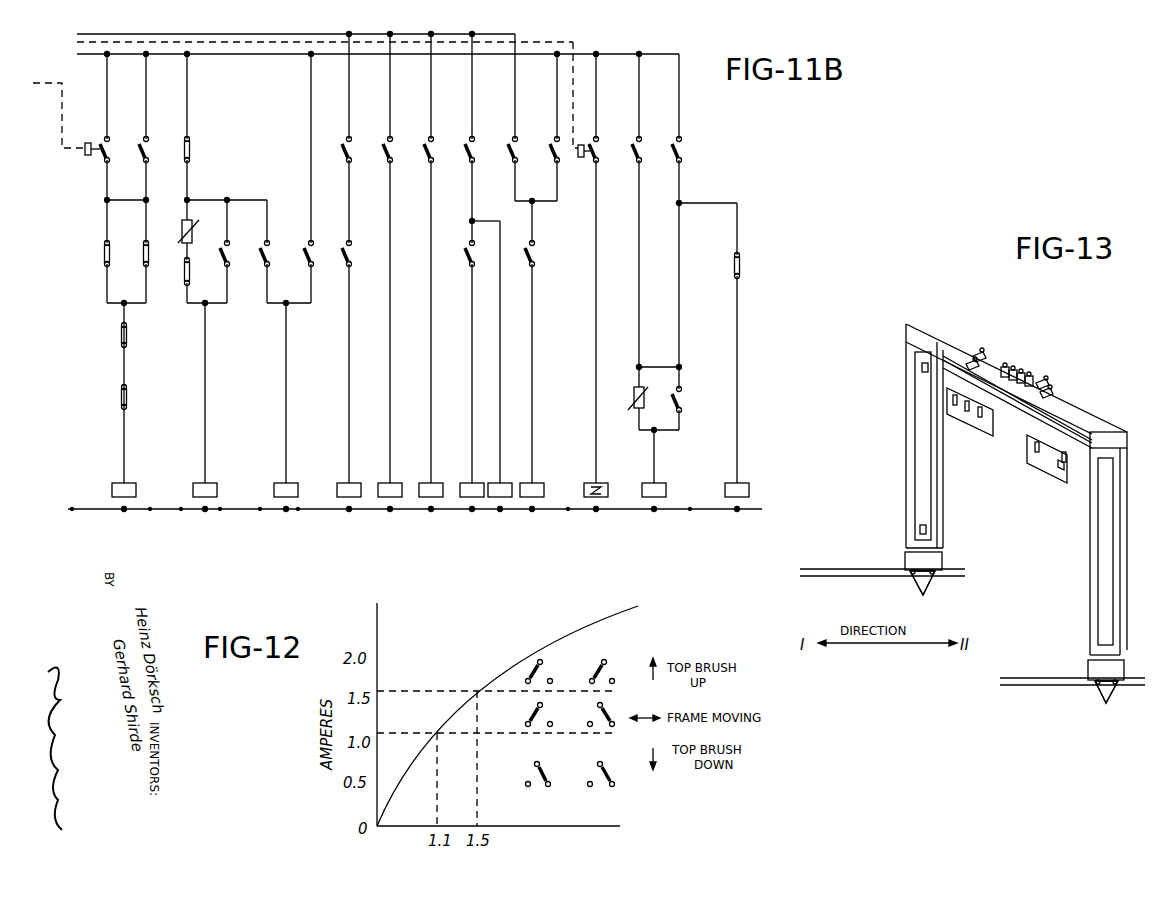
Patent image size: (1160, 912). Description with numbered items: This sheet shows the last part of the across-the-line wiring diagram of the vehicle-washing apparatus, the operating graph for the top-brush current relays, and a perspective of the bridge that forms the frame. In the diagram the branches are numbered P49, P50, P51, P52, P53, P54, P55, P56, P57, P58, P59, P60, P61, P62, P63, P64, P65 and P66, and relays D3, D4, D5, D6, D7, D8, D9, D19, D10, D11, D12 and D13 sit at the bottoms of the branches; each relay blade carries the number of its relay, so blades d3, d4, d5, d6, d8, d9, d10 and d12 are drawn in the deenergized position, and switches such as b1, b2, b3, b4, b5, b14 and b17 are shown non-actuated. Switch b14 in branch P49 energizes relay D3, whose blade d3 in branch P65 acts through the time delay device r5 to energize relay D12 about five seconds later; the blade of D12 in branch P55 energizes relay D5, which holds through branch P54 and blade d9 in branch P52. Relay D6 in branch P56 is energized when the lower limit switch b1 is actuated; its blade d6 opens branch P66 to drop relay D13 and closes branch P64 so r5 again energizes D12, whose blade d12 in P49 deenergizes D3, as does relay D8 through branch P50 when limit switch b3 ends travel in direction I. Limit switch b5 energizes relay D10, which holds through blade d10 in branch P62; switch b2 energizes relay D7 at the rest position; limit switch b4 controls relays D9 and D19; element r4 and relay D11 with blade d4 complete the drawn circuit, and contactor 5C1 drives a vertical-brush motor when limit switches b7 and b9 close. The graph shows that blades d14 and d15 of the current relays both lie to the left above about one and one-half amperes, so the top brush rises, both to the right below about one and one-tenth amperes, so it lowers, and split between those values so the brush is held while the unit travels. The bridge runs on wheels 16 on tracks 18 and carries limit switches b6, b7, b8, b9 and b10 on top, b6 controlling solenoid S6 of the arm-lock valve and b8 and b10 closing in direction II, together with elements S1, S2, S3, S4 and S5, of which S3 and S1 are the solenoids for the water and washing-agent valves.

In FIG. 11B, the switch b14 is at (99, 163).
In FIG. 11B, the blade of relay D12 d12 is at (104, 254).
In FIG. 11B, the relay contact d4 is at (121, 334).
In FIG. 11B, the blade of relay D8 d8 is at (127, 395).
In FIG. 11B, the blade of relay D9 d9 is at (190, 150).
In FIG. 11B, the adjustable resistor r4 is at (180, 232).
In FIG. 11B, the blade of relay D3 d3 is at (184, 275).
In FIG. 11B, the blade of relay D5 d5 is at (268, 248).
In FIG. 11B, the lower limit switch b1 is at (357, 149).
In FIG. 13, the lower limit switch b1 is at (926, 529).
In FIG. 11B, the contactor 5C1 is at (363, 254).
In FIG. 11B, the switch b2 is at (399, 148).
In FIG. 13, the switch b2 is at (1029, 372).
In FIG. 11B, the limit switch b3 is at (440, 148).
In FIG. 13, the limit switch b3 is at (1005, 363).
In FIG. 11B, the limit switch b4 is at (481, 148).
In FIG. 13, the limit switch b4 is at (921, 367).
In FIG. 11B, the limit switch b5 is at (524, 148).
In FIG. 13, the limit switch b5 is at (1013, 366).
In FIG. 11B, the blade of relay D10 d10 is at (559, 150).
In FIG. 11B, the push-button switch b17 is at (598, 150).
In FIG. 11B, the blade of relay D6 d6 is at (641, 150).
In FIG. 11B, the time delay device r5 is at (633, 396).
In FIG. 11B, the relay D3 is at (136, 490).
In FIG. 11B, the relay D4 is at (215, 486).
In FIG. 11B, the relay D5 is at (296, 486).
In FIG. 11B, the relay D6 is at (352, 483).
In FIG. 11B, the relay D7 is at (394, 483).
In FIG. 11B, the relay D8 is at (432, 486).
In FIG. 11B, the relay D9 is at (476, 483).
In FIG. 11B, the relay D19 is at (500, 483).
In FIG. 11B, the relay D10 is at (532, 483).
In FIG. 11B, the time-delay relay D11 is at (586, 483).
In FIG. 11B, the auxiliary relay D12 is at (666, 486).
In FIG. 11B, the relay D13 is at (749, 486).
In FIG. 11B, the branch P49 is at (77, 519).
In FIG. 11B, the branch P50 is at (128, 512).
In FIG. 11B, the branch P51 is at (153, 519).
In FIG. 11B, the branch P52 is at (183, 519).
In FIG. 11B, the terminal P53 is at (222, 519).
In FIG. 11B, the branch P54 is at (262, 519).
In FIG. 11B, the branch P55 is at (300, 519).
In FIG. 11B, the branch P56 is at (356, 512).
In FIG. 11B, the terminal P57 is at (382, 519).
In FIG. 11B, the terminal P58 is at (427, 519).
In FIG. 11B, the terminal P59 is at (465, 519).
In FIG. 11B, the terminal P60 is at (501, 519).
In FIG. 11B, the terminal P61 is at (550, 510).
In FIG. 11B, the branch P62 is at (570, 519).
In FIG. 11B, the terminal P63 is at (608, 519).
In FIG. 11B, the branch P64 is at (647, 519).
In FIG. 11B, the branch P65 is at (682, 519).
In FIG. 11B, the branch P66 is at (729, 519).
In FIG. 12, the blade of current relay D15 d15 is at (543, 660).
In FIG. 12, the blade of current relay D14 d14 is at (606, 660).
In FIG. 13, the tracks 18 is at (834, 570).
In FIG. 13, the wheels 16 is at (923, 595).
In FIG. 13, the limit switch b6 is at (1021, 369).
In FIG. 13, the limit switch b7 is at (983, 350).
In FIG. 13, the limit switch b8 is at (972, 360).
In FIG. 13, the limit switch b9 is at (1048, 378).
In FIG. 13, the limit switch b10 is at (1052, 390).
In FIG. 13, the solenoid S1 is at (1062, 470).
In FIG. 13, the switch S2 is at (1062, 462).
In FIG. 13, the solenoid S3 is at (1037, 452).
In FIG. 13, the switch S4 is at (967, 411).
In FIG. 13, the switch S5 is at (955, 405).
In FIG. 13, the solenoid S6 is at (980, 417).